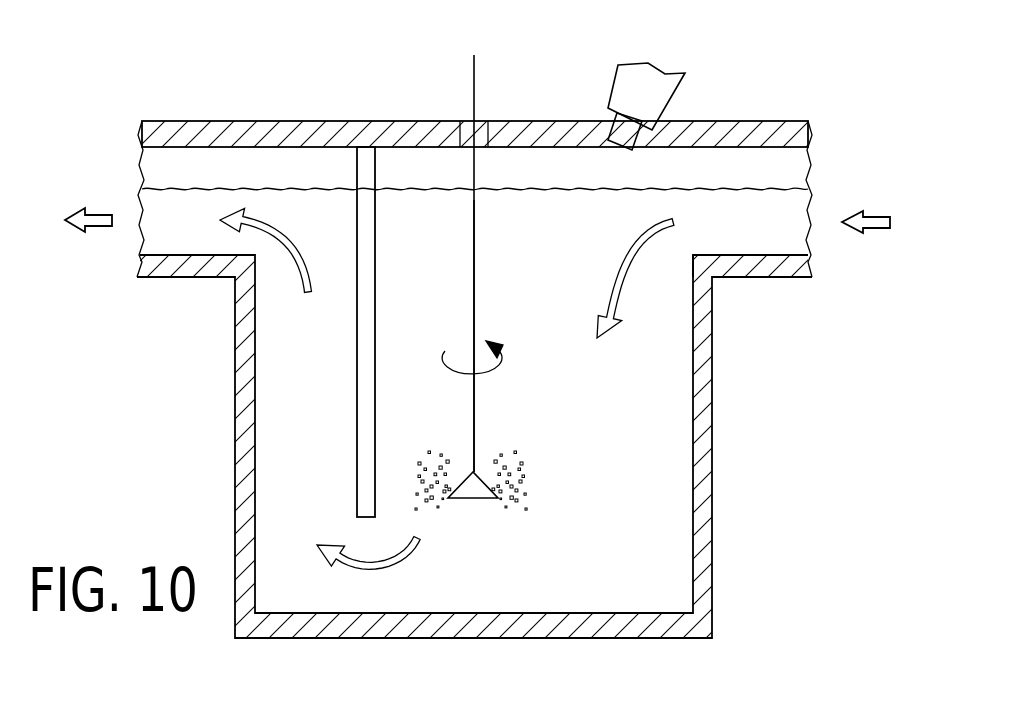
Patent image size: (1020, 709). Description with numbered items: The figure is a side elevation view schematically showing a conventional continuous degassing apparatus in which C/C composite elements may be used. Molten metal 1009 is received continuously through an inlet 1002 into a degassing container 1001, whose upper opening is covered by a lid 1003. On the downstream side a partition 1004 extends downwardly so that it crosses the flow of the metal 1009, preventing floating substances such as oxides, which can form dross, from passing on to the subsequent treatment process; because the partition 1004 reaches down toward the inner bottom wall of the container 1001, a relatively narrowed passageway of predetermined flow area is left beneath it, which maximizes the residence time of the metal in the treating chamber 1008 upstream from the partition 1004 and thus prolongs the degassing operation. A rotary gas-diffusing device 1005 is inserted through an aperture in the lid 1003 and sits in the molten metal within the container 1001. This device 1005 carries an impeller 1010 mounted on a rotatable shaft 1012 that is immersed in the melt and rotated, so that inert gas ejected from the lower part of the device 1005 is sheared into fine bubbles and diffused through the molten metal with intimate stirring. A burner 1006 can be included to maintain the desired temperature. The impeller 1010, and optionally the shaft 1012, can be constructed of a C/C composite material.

The degassing container 1001 is at (712, 392).
The inlet 1002 is at (748, 280).
The lid 1003 is at (256, 120).
The partition 1004 is at (363, 437).
The rotary gas-diffusing device 1005 is at (470, 240).
The burner 1006 is at (650, 75).
The treating chamber 1008 is at (663, 477).
The molten metal 1009 is at (740, 190).
The impeller 1010 is at (473, 500).
The rotatable shaft 1012 is at (474, 262).